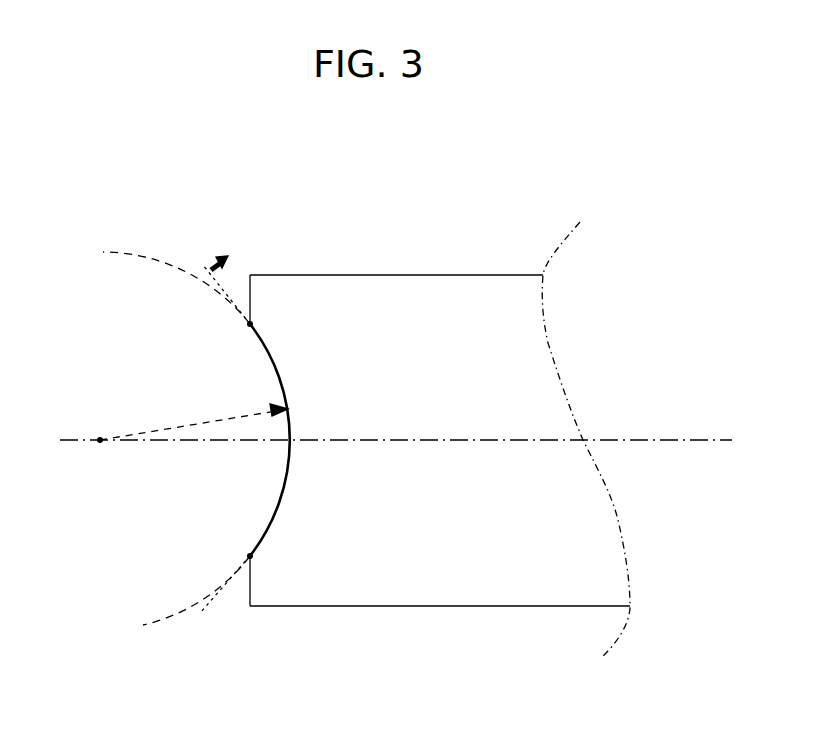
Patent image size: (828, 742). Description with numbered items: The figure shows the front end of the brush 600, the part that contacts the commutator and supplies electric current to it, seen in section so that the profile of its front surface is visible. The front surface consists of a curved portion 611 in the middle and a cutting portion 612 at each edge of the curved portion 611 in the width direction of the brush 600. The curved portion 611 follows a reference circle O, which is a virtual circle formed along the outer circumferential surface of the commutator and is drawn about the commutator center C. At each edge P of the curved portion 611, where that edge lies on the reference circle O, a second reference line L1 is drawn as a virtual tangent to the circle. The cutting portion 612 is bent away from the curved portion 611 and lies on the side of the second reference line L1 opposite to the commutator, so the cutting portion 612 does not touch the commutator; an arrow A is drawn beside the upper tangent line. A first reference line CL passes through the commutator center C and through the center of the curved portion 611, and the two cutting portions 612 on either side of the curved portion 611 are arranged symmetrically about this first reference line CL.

The brush 600 is at (442, 274).
The curved portion 611 is at (288, 469).
The cutting portion 612 is at (249, 285).
The edge of the curved portion P is at (250, 324).
The reference circle O is at (103, 252).
The second reference line L1 is at (203, 267).
The direction arrow A is at (224, 254).
The center of the commutator C is at (100, 443).
The first reference line CL is at (710, 441).